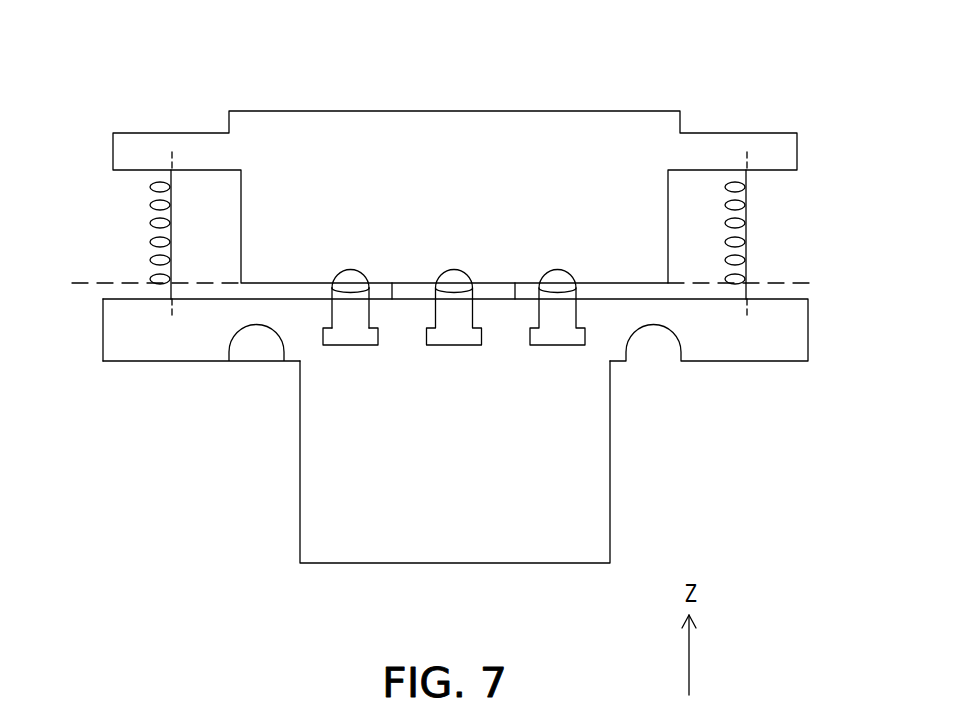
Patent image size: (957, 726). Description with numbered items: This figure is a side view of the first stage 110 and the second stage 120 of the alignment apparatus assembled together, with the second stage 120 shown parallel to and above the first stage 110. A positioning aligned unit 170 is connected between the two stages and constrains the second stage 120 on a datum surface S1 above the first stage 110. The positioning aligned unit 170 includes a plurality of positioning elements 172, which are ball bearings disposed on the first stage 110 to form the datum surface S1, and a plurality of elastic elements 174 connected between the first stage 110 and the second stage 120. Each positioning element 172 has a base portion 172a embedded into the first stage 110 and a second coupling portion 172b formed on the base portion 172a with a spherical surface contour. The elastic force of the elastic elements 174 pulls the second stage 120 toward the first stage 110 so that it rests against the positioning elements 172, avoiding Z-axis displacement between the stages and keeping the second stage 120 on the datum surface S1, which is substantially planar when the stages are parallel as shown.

The first stage 110 is at (310, 518).
The second stage 120 is at (277, 125).
The positioning aligned unit 170 is at (742, 512).
The positioning element 172 is at (411, 360).
The base portion 172a is at (348, 338).
The second coupling portion 172b is at (345, 263).
The elastic element 174 is at (747, 250).
The datum surface S1 is at (92, 283).